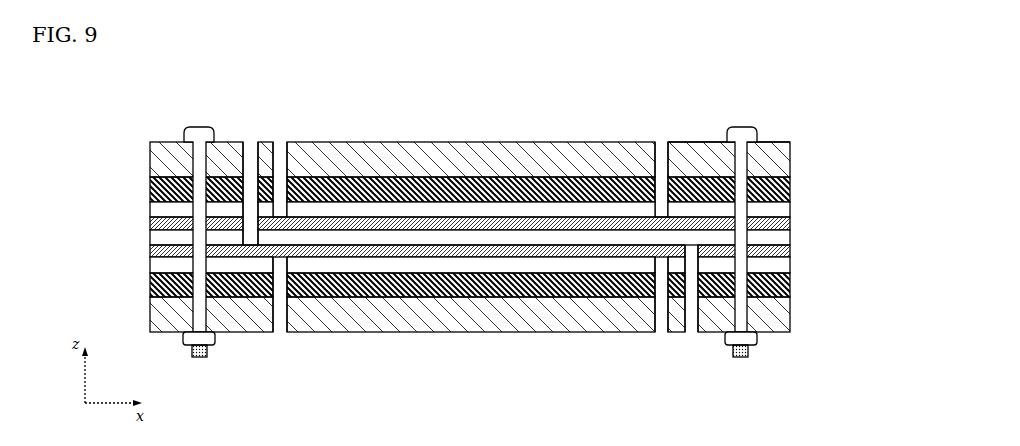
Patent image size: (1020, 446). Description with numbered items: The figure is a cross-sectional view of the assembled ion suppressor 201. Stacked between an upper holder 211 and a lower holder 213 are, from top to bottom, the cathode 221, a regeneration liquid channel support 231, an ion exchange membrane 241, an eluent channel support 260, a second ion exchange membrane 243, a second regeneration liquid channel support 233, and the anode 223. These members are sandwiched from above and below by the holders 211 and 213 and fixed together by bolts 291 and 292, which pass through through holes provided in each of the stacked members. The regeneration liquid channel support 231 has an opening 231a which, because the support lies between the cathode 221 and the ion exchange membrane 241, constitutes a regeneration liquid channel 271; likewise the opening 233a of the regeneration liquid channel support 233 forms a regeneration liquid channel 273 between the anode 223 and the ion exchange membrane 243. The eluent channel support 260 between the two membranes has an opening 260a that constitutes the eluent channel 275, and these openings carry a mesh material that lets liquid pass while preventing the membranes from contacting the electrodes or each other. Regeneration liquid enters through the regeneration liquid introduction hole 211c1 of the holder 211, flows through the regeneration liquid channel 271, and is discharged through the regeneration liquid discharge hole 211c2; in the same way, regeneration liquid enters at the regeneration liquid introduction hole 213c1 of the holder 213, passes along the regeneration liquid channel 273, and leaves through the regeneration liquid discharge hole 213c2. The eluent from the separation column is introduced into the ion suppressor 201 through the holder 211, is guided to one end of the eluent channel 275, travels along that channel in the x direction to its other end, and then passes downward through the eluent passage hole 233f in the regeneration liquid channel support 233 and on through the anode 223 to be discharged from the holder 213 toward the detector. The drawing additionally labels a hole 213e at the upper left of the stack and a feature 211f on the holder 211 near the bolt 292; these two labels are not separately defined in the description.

The ion suppressor 201 is at (128, 147).
The holder 211 is at (785, 163).
The cathode 221 is at (790, 188).
The regeneration liquid channel support 231 is at (503, 151).
The ion exchange membrane 241 is at (790, 223).
The eluent channel support 260 is at (504, 167).
The ion exchange membrane 243 is at (792, 252).
The regeneration liquid channel support 233 is at (503, 320).
The anode 223 is at (792, 288).
The holder 213 is at (792, 320).
The regeneration liquid discharge hole 211c2 is at (345, 140).
The regeneration liquid introduction hole 211c1 is at (661, 80).
The top surface of first insulating layer 211f is at (737, 123).
The slot through upper layers 213e is at (251, 141).
The regeneration liquid discharge hole 213c2 is at (343, 355).
The regeneration liquid introduction hole 213c1 is at (661, 393).
The eluent passage hole 233f is at (691, 332).
The regeneration liquid channel 271 is at (471, 151).
The opening 231a is at (423, 212).
The eluent channel 275 is at (524, 165).
The opening 260a is at (524, 165).
The regeneration liquid channel 273 is at (471, 326).
The opening 233a is at (428, 265).
The bolt 291 is at (198, 135).
The bolt 292 is at (740, 135).